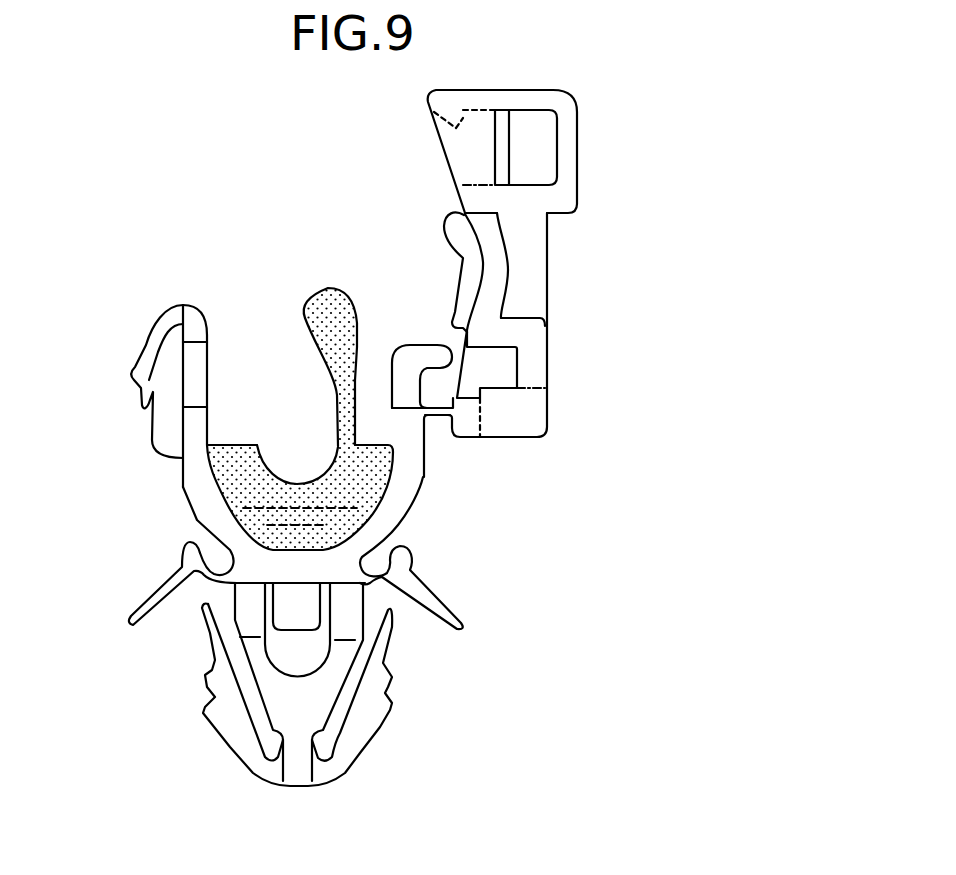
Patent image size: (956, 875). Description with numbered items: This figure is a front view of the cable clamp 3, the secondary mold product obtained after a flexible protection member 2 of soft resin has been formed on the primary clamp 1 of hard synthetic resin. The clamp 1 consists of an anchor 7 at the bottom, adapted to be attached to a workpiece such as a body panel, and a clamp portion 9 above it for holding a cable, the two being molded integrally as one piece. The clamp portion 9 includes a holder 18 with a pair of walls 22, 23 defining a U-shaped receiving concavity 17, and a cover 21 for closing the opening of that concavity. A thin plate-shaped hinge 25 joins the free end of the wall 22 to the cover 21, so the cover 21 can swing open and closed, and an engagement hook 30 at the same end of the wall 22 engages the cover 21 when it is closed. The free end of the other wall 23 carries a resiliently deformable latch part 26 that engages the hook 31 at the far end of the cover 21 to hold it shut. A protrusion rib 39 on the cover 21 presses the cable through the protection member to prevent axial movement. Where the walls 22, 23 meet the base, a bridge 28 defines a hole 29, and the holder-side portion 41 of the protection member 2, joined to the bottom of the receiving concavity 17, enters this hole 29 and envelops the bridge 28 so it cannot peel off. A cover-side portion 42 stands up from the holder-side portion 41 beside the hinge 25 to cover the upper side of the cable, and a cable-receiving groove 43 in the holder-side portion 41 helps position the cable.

The clamp 1 is at (580, 580).
The protection member 2 is at (307, 291).
The cable clamp 3 is at (627, 212).
The anchor 7 is at (448, 692).
The clamp portion 9 is at (489, 541).
The receiving concavity 17 is at (250, 426).
The holder 18 is at (427, 480).
The cover 21 is at (550, 300).
The wall 22 is at (393, 497).
The wall 23 is at (193, 473).
The hinge 25 is at (437, 418).
The latch part 26 is at (140, 365).
The bridge 28 is at (270, 612).
The hole 29 is at (270, 612).
The engagement hook 30 is at (422, 352).
The hook 31 is at (453, 127).
The protrusion rib 39 is at (463, 255).
The holder-side portion 41 is at (223, 483).
The cover-side portion 42 is at (356, 323).
The cable-receiving groove 43 is at (288, 447).